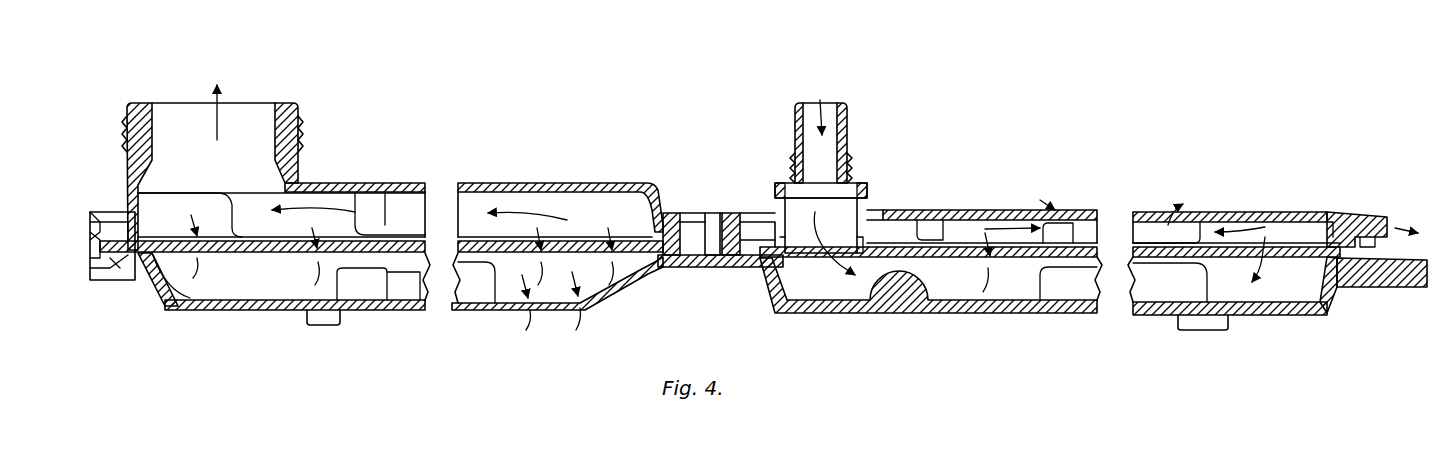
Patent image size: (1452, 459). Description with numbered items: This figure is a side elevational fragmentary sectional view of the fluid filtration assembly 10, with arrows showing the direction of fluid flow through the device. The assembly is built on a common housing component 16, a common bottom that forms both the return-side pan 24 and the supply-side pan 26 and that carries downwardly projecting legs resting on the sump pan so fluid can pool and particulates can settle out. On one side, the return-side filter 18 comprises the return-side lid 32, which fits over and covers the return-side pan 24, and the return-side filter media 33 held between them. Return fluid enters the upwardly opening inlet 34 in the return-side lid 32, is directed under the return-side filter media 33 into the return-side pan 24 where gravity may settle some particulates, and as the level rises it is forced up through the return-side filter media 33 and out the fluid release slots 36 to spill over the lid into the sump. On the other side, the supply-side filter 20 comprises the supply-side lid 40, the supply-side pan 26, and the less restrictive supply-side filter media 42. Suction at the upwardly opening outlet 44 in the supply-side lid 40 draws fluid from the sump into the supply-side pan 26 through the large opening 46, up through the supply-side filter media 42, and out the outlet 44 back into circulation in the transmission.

The fluid filtration assembly 10 is at (1277, 236).
The common housing component 16 is at (720, 268).
The return-side filter 18 is at (918, 208).
The supply-side filter 20 is at (557, 258).
The return-side pan 24 is at (1052, 308).
The supply-side pan 26 is at (272, 310).
The return-side lid 32 is at (1262, 212).
The return-side filter media 33 is at (1308, 255).
The inlet 34 is at (845, 115).
The fluid release slots 36 is at (1073, 196).
The supply-side lid 40 is at (585, 183).
The supply-side filter media 42 is at (220, 255).
The outlet 44 is at (257, 113).
The large opening 46 is at (505, 312).